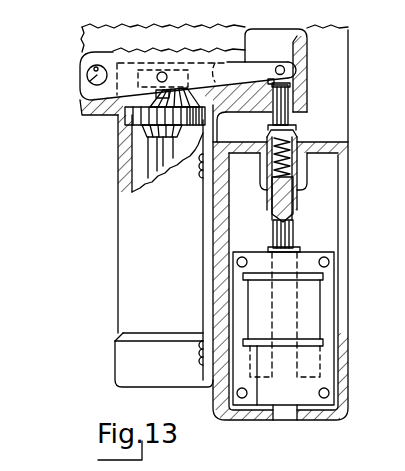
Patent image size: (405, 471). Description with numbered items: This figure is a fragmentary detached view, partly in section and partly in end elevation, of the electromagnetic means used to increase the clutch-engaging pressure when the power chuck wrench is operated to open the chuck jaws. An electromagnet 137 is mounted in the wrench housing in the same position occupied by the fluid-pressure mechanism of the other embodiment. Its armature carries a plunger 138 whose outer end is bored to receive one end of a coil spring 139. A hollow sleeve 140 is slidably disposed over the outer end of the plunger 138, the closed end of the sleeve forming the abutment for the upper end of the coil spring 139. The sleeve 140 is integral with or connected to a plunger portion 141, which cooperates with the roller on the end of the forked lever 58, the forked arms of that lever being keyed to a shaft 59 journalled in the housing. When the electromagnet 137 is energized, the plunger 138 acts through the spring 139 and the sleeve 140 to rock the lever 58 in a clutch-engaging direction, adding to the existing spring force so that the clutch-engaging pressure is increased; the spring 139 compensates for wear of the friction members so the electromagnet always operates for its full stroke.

The forked lever 58 is at (242, 62).
The shaft 59 is at (87, 79).
The electromagnet 137 is at (327, 307).
The plunger 138 is at (294, 236).
The coil spring 139 is at (297, 134).
The hollow sleeve 140 is at (298, 118).
The plunger portion 141 is at (270, 119).